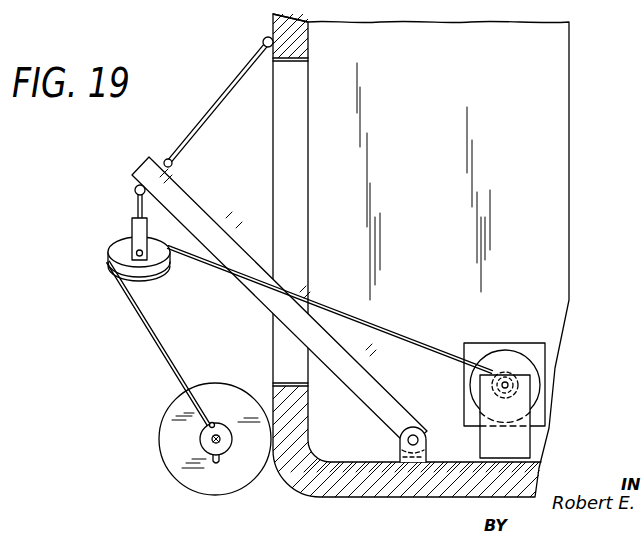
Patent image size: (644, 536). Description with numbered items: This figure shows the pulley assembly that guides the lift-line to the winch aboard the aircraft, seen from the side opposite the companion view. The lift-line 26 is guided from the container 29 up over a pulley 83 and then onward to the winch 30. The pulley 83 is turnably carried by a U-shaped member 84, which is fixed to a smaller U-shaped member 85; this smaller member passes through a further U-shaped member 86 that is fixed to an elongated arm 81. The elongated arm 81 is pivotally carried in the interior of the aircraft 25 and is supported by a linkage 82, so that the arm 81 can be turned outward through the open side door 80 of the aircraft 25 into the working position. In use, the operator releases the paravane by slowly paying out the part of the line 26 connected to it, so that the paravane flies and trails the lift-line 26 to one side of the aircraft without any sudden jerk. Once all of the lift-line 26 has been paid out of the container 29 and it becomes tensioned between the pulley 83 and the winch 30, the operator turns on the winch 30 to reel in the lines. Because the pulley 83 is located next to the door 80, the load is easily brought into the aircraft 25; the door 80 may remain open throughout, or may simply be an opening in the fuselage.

The aircraft 25 is at (308, 40).
The lift-line 26 is at (167, 357).
The container 29 is at (202, 477).
The winch 30 is at (540, 328).
The open side door 80 is at (275, 142).
The elongated arm 81 is at (201, 214).
The linkage 82 is at (247, 67).
The pulley 83 is at (156, 274).
The U-shaped member 84 is at (132, 230).
The smaller U-shaped member 85 is at (137, 205).
The further U-shaped member 86 is at (135, 191).